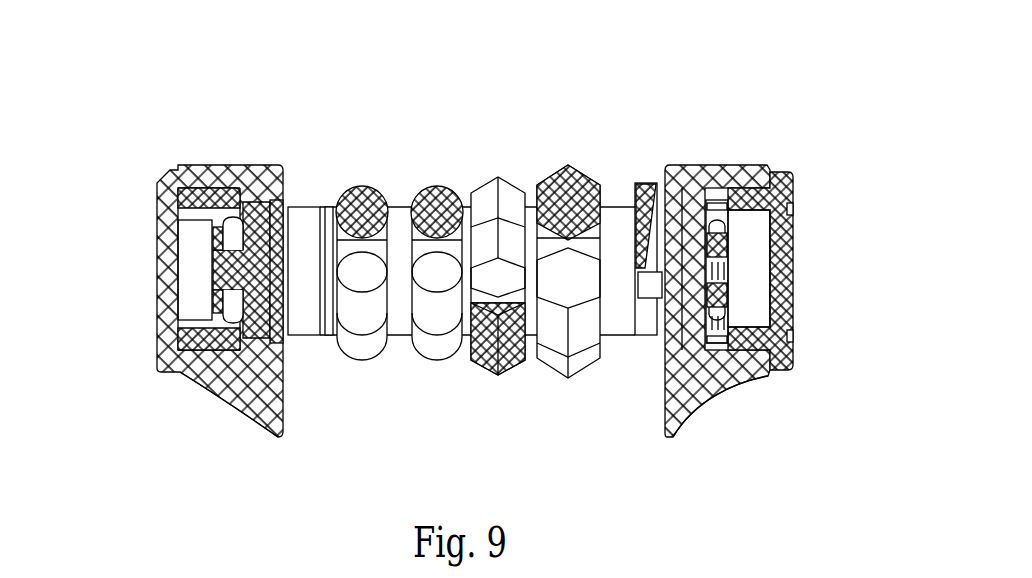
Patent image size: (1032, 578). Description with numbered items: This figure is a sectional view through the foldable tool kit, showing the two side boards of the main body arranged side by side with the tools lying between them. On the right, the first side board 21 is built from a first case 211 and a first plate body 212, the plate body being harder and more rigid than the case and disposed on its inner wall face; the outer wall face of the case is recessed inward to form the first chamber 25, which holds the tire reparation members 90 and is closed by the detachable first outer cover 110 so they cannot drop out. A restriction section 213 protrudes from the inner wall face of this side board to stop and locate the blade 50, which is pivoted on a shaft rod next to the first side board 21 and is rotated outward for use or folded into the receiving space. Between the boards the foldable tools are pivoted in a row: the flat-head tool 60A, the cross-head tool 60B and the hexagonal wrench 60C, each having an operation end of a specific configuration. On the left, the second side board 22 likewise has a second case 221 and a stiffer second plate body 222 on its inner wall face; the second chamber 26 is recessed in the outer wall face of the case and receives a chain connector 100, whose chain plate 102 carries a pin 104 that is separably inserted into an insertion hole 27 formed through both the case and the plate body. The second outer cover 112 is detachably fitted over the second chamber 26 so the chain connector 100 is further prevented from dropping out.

The first side board 21 is at (725, 158).
The first case 211 is at (705, 386).
The first plate body 212 is at (674, 203).
The restriction section 213 is at (650, 298).
The second side board 22 is at (230, 157).
The second case 221 is at (245, 393).
The second plate body 222 is at (288, 208).
The first chamber 25 is at (748, 278).
The second chamber 26 is at (193, 267).
The insertion hole 27 is at (286, 374).
The blade 50 is at (645, 180).
The flat-head tool 60A is at (373, 180).
The cross-head tool 60B is at (431, 181).
The hexagonal wrench 60C is at (513, 180).
The tire reparation member 90 is at (727, 245).
The chain connector 100 is at (212, 240).
The chain plate 102 is at (212, 307).
The pin 104 is at (253, 267).
The first outer cover 110 is at (793, 297).
The second outer cover 112 is at (157, 233).